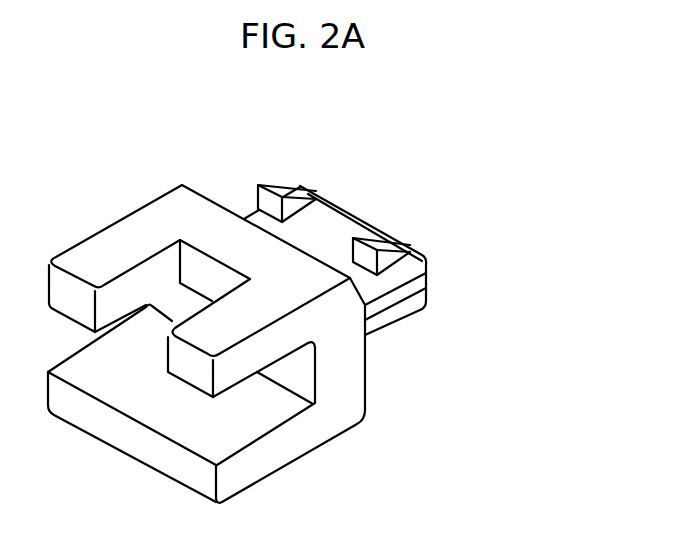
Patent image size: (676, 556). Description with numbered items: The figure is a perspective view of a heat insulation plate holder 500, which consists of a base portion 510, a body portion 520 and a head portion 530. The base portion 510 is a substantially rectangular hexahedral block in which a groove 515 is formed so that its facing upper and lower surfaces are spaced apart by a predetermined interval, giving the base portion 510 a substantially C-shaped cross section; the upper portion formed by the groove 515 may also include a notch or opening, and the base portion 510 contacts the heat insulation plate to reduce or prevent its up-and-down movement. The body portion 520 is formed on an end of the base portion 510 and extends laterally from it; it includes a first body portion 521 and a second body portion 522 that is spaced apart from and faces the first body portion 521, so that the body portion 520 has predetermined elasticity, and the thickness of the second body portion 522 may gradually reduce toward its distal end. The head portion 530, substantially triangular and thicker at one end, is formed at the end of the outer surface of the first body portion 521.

The heat insulation plate holder 500 is at (418, 178).
The base portion 510 is at (250, 470).
The groove 515 is at (188, 393).
The body portion 520 is at (476, 489).
The first body portion 521 is at (260, 218).
The second body portion 522 is at (368, 322).
The head portion 530 is at (301, 187).